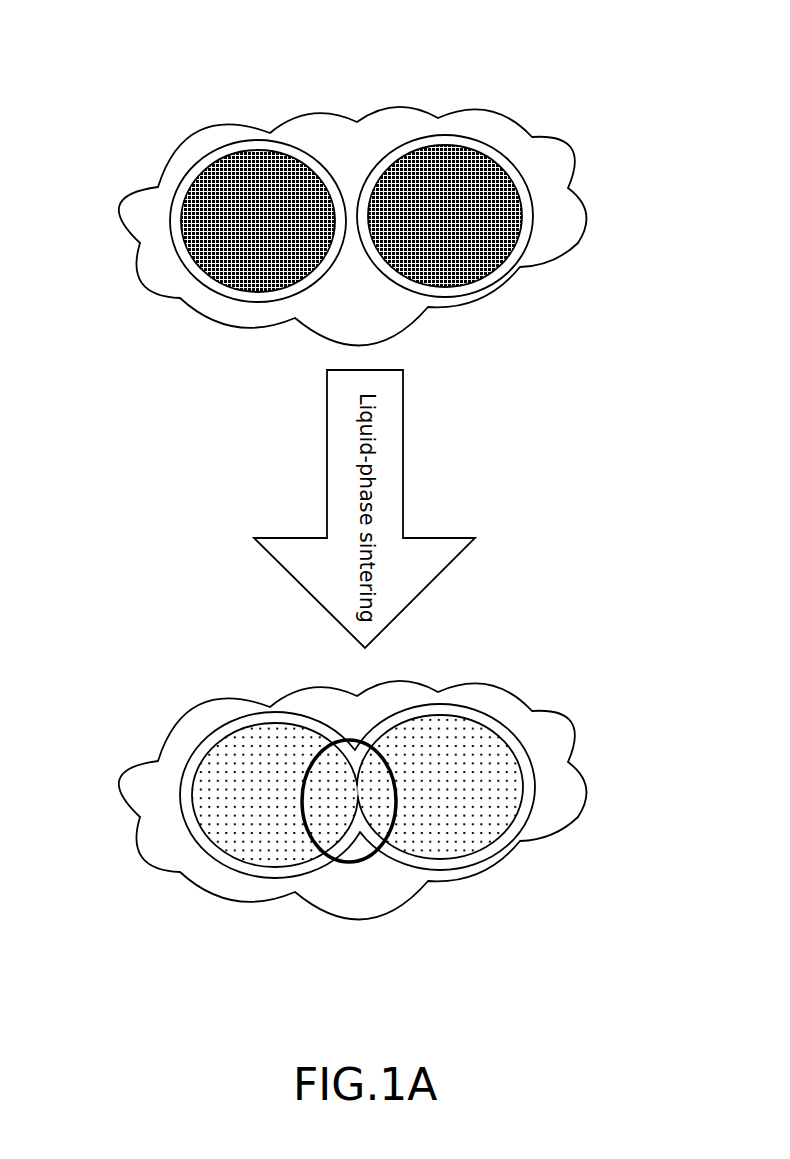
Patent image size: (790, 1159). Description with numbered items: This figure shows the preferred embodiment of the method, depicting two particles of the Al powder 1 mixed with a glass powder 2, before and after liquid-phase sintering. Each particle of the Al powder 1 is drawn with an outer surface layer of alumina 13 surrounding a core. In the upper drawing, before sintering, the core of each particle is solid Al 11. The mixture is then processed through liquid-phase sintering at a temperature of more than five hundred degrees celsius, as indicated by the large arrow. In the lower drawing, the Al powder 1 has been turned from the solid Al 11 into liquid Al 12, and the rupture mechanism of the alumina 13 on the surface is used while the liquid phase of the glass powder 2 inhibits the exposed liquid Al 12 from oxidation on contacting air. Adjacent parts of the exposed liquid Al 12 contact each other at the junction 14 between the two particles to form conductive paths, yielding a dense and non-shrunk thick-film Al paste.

The Al powder 1 is at (428, 492).
The glass powder 2 is at (141, 208).
The solid Al 11 is at (522, 218).
The liquid Al 12 is at (503, 795).
The alumina 13 is at (523, 183).
The neck 14 is at (352, 862).